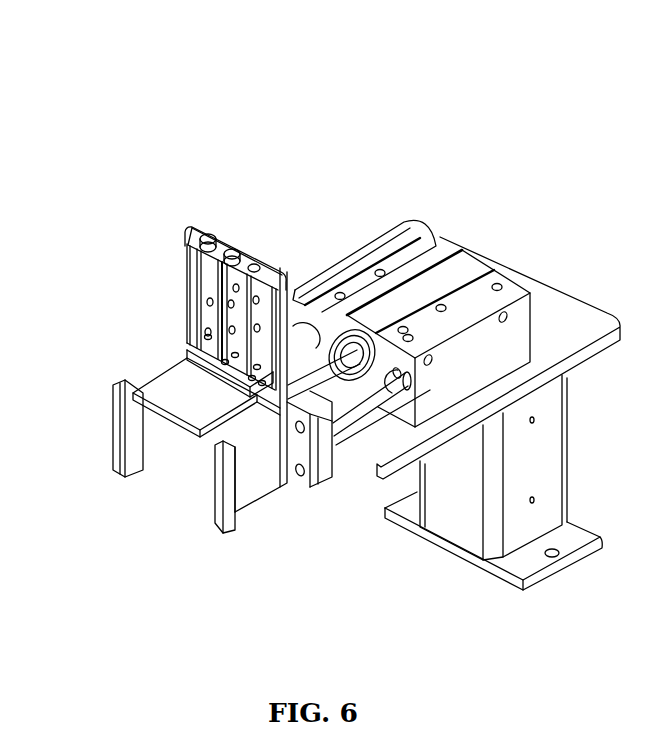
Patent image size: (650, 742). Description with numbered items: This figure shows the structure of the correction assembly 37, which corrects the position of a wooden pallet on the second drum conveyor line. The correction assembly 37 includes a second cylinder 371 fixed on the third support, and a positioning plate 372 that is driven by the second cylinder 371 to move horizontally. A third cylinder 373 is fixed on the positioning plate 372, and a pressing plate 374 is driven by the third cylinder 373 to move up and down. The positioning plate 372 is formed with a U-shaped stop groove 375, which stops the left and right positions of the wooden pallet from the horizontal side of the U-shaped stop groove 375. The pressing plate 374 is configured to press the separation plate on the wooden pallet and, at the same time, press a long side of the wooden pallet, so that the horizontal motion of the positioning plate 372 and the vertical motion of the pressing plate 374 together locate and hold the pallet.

The correction assembly 37 is at (275, 125).
The second cylinder 371 is at (442, 272).
The positioning plate 372 is at (258, 472).
The third cylinder 373 is at (185, 260).
The pressing plate 374 is at (168, 396).
The U-shaped stop groove 375 is at (184, 480).